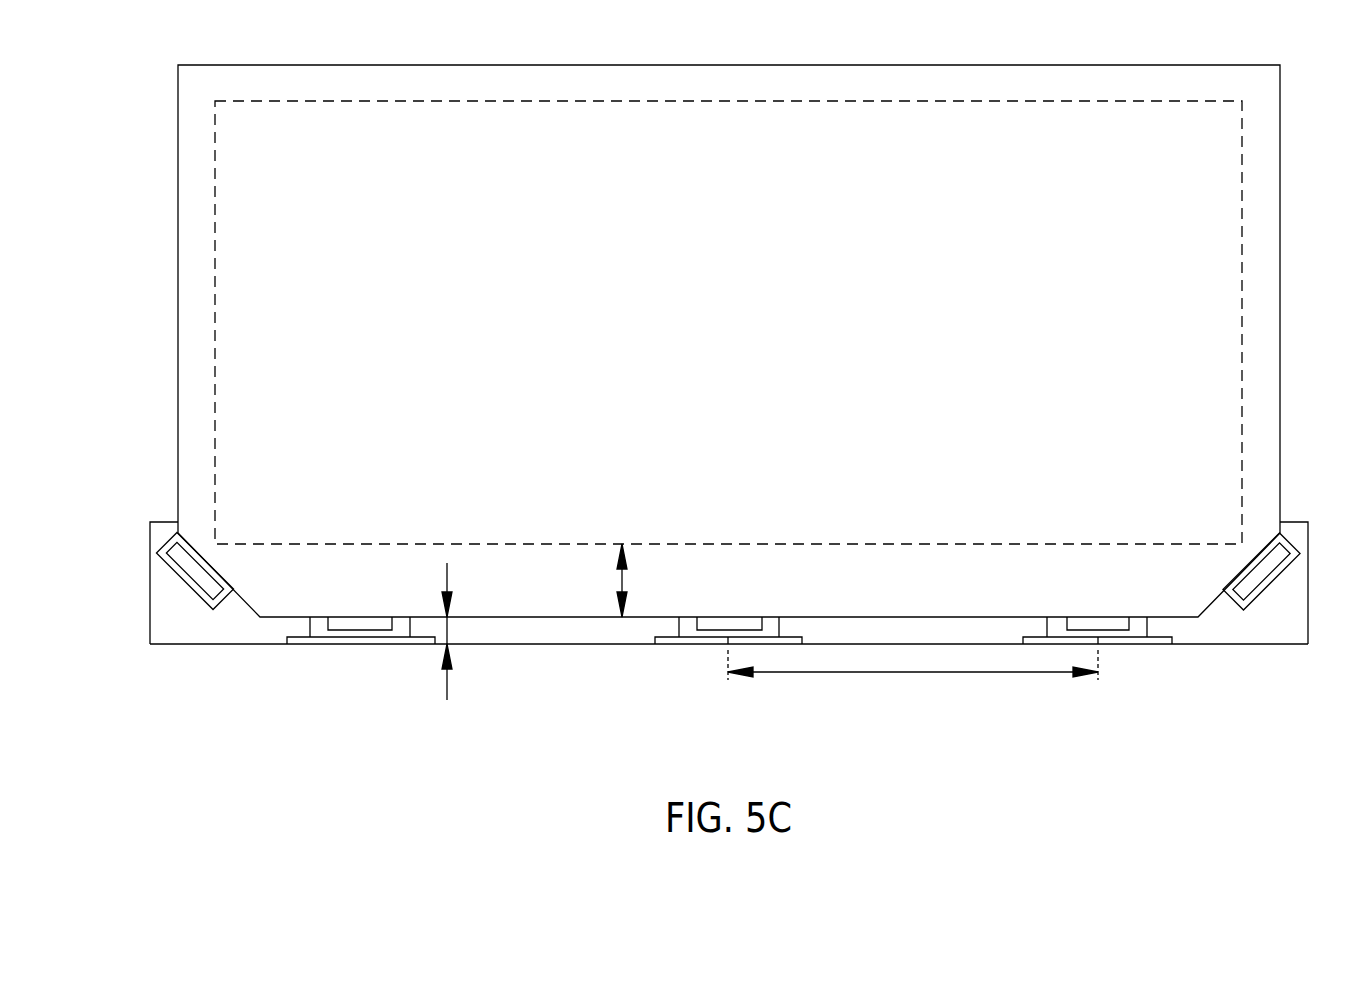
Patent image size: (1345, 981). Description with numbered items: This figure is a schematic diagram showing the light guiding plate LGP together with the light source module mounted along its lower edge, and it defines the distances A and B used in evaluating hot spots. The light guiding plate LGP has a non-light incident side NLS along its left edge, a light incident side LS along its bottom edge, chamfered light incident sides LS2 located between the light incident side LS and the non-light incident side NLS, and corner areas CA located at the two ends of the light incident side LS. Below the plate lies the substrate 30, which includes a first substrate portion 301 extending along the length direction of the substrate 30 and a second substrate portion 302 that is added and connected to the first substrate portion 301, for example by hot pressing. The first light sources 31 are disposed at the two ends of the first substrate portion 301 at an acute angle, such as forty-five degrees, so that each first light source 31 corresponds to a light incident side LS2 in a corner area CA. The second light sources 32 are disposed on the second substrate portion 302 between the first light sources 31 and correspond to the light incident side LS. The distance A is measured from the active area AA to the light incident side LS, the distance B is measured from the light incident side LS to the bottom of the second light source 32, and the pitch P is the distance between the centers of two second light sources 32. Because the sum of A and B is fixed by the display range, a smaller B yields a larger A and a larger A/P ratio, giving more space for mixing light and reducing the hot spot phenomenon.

The substrate 30 is at (238, 689).
The first substrate portion 301 is at (178, 607).
The second substrate portion 302 is at (297, 642).
The first light source 31 is at (193, 553).
The second light source 32 is at (352, 622).
The light guiding plate LGP is at (848, 597).
The active area AA is at (755, 334).
The non-light incident side NLS is at (178, 243).
The corner area CA is at (253, 567).
The light incident side LS is at (527, 617).
The light incident side LS2 is at (248, 603).
The distance A is at (613, 580).
The distance B is at (457, 631).
The pitch length P is at (913, 677).